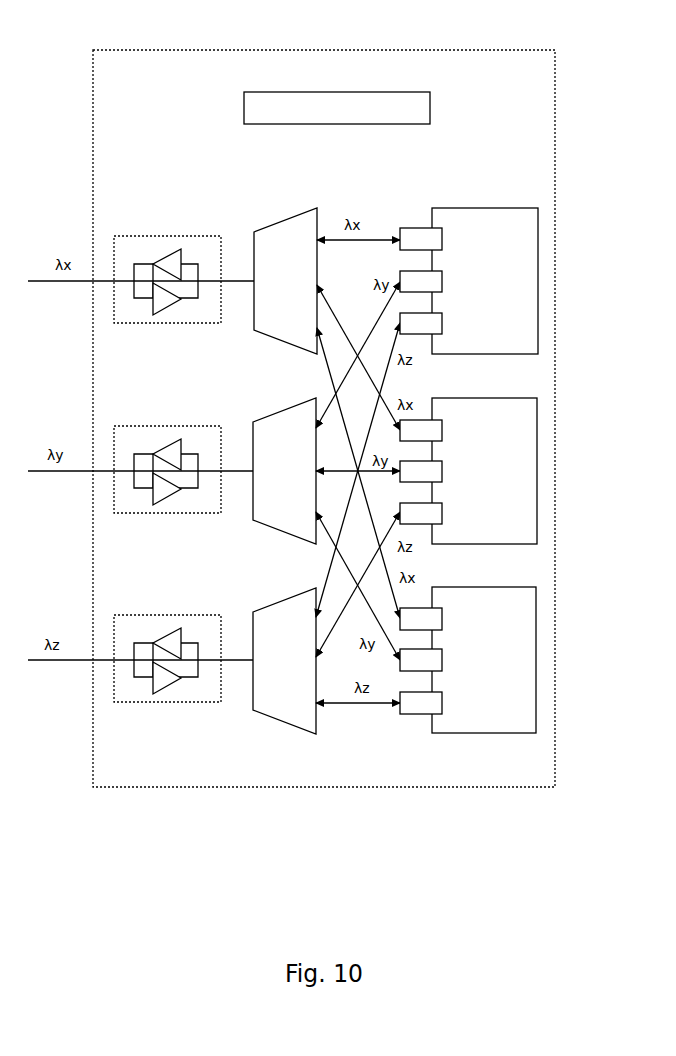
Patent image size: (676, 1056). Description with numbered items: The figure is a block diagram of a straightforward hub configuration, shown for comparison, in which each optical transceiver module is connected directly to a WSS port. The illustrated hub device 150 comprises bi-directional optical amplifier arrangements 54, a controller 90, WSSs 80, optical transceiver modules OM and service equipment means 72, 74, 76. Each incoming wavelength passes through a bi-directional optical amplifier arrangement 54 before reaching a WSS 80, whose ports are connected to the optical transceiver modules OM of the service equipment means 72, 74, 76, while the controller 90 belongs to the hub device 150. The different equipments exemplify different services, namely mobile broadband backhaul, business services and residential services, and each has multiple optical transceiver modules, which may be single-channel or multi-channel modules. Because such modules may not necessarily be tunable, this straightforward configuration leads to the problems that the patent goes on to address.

The hub device 150 is at (196, 50).
The controller 90 is at (430, 95).
The bi-directional optical amplifier arrangement 54 is at (152, 236).
The WSS 80 is at (283, 228).
The service equipment means 72 is at (538, 216).
The service equipment means 74 is at (537, 478).
The service equipment means 76 is at (536, 628).